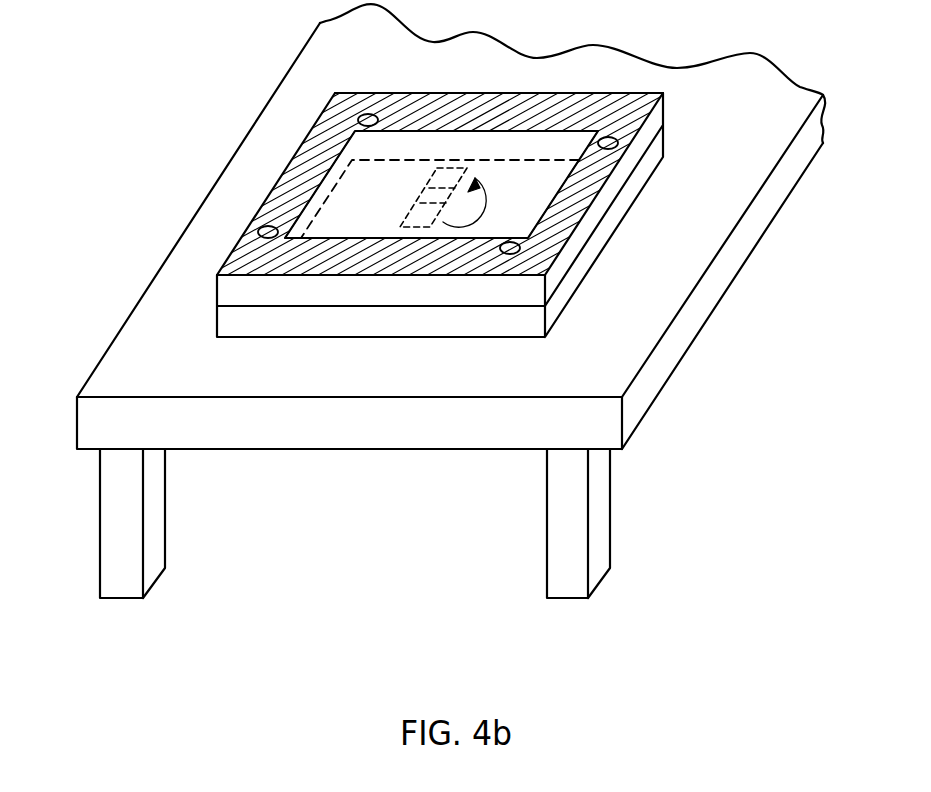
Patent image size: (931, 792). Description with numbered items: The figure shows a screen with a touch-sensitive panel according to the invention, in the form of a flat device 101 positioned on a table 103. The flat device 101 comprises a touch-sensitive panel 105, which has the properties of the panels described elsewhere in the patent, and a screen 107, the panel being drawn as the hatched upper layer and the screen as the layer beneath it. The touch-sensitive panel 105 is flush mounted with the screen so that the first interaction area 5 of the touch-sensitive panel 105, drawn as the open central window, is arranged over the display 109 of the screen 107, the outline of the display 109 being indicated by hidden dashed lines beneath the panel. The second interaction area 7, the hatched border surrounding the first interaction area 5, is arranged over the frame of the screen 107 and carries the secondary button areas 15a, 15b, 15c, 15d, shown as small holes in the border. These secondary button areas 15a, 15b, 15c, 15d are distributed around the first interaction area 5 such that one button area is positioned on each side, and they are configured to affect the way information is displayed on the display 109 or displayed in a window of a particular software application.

The flat device 101 is at (384, 275).
The table 103 is at (638, 395).
The touch-sensitive panel 105 is at (217, 292).
The screen 107 is at (217, 322).
The display 109 is at (358, 213).
The first interaction area 5 is at (373, 153).
The second interaction area 7 is at (525, 108).
The secondary button area 15a is at (506, 254).
The secondary button area 15b is at (617, 146).
The secondary button area 15c is at (359, 118).
The secondary button area 15d is at (258, 231).